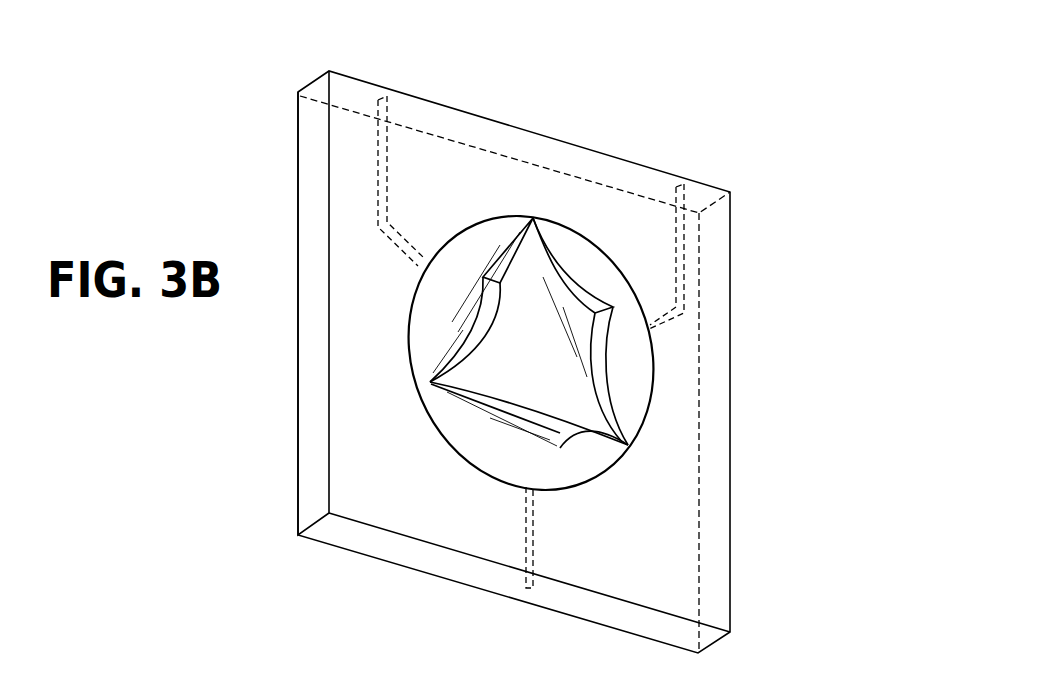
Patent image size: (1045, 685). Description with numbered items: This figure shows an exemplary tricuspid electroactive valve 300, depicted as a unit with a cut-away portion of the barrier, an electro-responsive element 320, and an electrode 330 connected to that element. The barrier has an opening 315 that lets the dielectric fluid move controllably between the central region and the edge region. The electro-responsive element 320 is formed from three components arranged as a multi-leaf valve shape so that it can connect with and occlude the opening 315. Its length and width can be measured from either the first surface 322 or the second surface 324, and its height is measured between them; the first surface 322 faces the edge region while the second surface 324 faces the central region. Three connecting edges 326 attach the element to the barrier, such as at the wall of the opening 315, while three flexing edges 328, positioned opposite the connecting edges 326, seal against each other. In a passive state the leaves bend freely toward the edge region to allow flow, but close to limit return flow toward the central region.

The electroactive valve 300 is at (718, 115).
The opening 315 is at (407, 330).
The electro-responsive element 320 is at (413, 293).
The first surface 322 is at (603, 277).
The second surface 324 is at (602, 365).
The connecting edge 326 is at (640, 303).
The flexing edge 328 is at (560, 278).
The electrode 330 is at (372, 168).